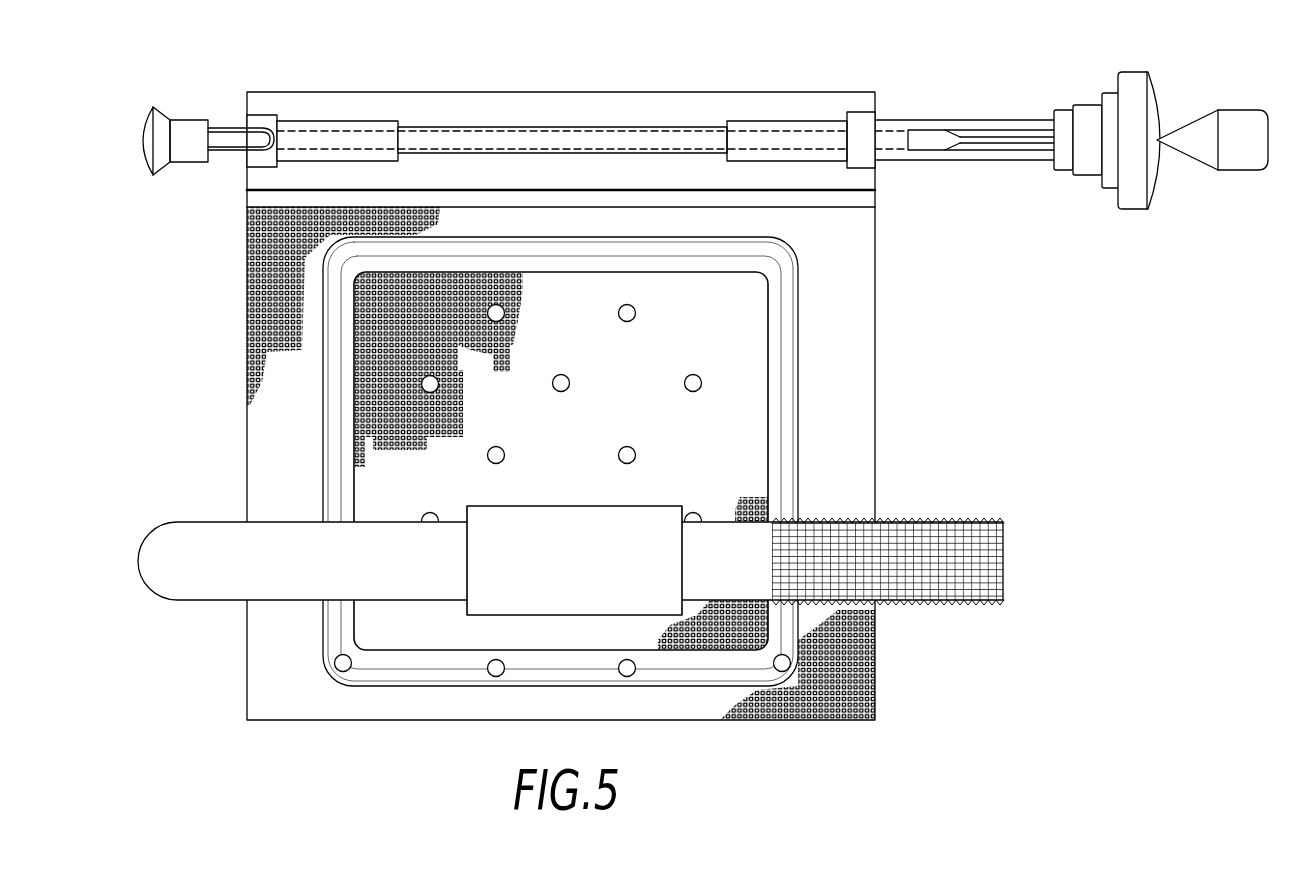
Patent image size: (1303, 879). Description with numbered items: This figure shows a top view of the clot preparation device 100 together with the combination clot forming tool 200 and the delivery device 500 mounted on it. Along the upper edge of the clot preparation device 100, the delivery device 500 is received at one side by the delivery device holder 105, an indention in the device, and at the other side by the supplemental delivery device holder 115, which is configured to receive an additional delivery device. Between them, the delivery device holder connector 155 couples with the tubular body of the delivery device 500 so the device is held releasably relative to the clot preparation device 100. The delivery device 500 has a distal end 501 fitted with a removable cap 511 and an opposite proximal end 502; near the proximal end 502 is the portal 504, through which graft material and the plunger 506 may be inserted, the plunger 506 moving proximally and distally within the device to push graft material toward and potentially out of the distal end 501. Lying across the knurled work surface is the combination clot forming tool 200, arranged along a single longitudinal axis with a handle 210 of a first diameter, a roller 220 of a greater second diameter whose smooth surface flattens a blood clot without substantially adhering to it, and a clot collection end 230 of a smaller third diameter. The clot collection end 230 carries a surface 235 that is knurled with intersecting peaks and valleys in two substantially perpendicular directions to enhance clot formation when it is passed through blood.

The clot preparation device 100 is at (886, 375).
The delivery device holder 105 is at (247, 117).
The supplemental delivery device holder 115 is at (872, 197).
The delivery device holder connector 155 is at (748, 122).
The combination clot forming tool 200 is at (611, 554).
The handle 210 is at (202, 590).
The roller 220 is at (657, 560).
The clot collection end 230 is at (928, 527).
The surface 235 is at (936, 530).
The delivery device 500 is at (538, 126).
The distal end 501 is at (222, 128).
The proximal end 502 is at (995, 162).
The portal 504 is at (913, 130).
The plunger 506 is at (1015, 140).
The cap 511 is at (147, 108).